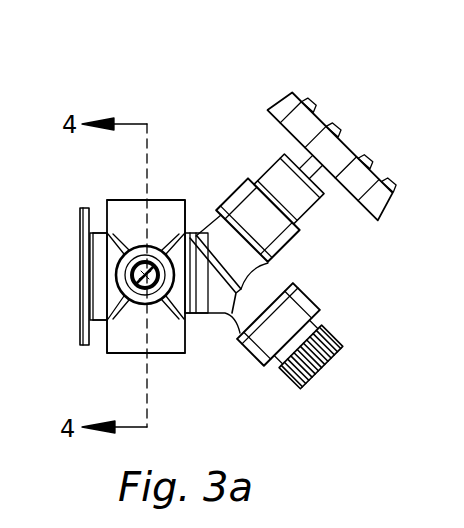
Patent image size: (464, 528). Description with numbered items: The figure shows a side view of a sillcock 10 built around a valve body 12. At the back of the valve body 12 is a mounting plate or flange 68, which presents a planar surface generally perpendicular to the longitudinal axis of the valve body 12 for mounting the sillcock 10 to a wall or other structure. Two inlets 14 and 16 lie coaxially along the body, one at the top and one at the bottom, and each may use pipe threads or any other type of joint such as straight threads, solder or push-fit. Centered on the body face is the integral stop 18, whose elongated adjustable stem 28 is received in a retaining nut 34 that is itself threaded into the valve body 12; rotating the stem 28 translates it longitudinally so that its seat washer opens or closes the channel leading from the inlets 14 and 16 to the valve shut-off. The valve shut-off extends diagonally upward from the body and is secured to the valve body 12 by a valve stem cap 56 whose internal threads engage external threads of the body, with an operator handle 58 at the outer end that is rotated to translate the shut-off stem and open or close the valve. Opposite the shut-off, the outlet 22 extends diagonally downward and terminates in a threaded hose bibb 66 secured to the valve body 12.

The sillcock 10 is at (362, 48).
The valve body 12 is at (196, 268).
The inlet 14 is at (128, 203).
The inlet 16 is at (130, 357).
The integral stop 18 is at (91, 199).
The outlet 22 is at (255, 350).
The elongated adjustable stem 28 is at (149, 268).
The retaining nut 34 is at (150, 297).
The valve stem cap 56 is at (303, 212).
The operator handle 58 is at (340, 155).
The threaded hose bibb 66 is at (338, 332).
The mounting plate or flange 68 is at (82, 262).